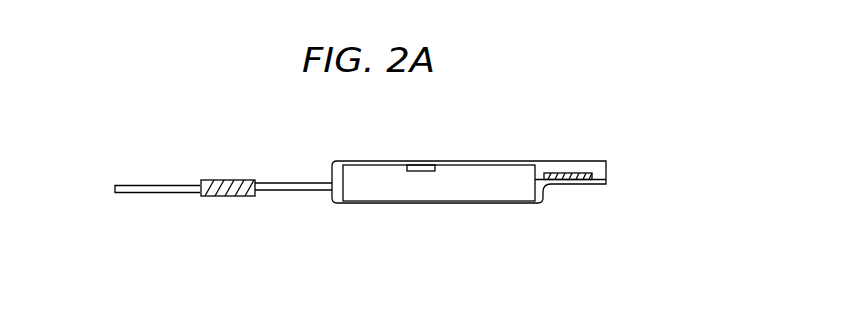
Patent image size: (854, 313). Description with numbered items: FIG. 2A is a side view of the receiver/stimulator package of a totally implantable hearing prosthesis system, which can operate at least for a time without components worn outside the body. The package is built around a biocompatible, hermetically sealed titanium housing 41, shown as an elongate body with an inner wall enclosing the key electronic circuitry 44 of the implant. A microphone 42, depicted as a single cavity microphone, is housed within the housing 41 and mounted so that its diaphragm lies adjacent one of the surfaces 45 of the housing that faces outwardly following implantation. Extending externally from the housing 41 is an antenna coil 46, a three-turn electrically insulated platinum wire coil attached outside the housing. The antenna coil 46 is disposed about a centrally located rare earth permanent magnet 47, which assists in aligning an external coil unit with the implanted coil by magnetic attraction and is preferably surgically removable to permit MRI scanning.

The housing 41 is at (527, 138).
The microphone 42 is at (420, 167).
The electronic circuitry 44 is at (572, 173).
The surface of the housing 45 is at (478, 161).
The antenna coil 46 is at (140, 186).
The permanent magnet 47 is at (230, 180).